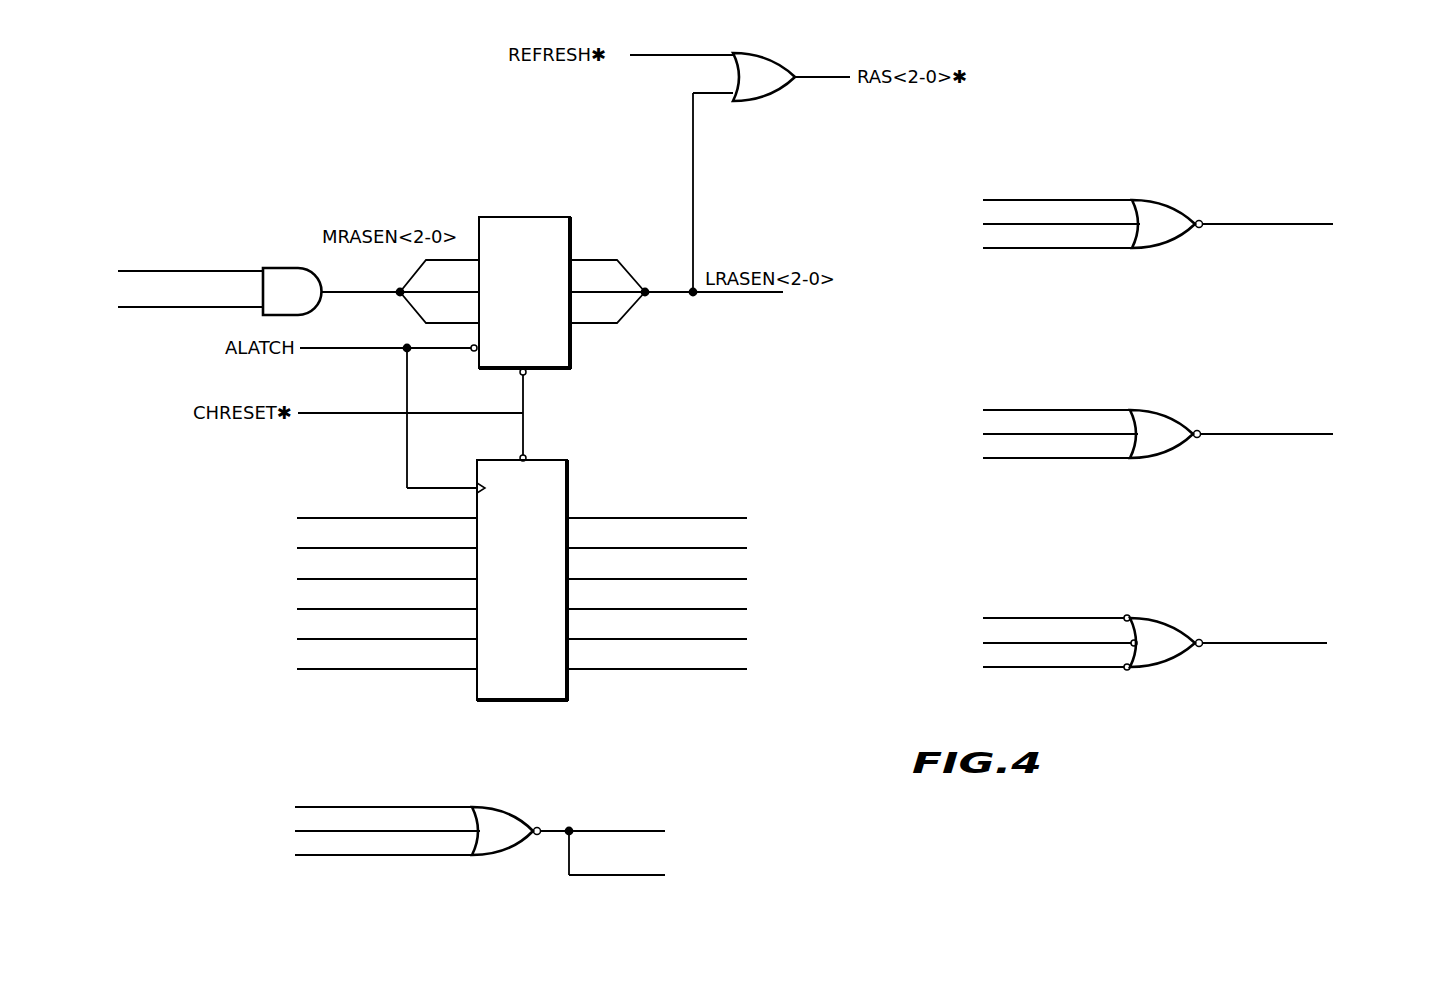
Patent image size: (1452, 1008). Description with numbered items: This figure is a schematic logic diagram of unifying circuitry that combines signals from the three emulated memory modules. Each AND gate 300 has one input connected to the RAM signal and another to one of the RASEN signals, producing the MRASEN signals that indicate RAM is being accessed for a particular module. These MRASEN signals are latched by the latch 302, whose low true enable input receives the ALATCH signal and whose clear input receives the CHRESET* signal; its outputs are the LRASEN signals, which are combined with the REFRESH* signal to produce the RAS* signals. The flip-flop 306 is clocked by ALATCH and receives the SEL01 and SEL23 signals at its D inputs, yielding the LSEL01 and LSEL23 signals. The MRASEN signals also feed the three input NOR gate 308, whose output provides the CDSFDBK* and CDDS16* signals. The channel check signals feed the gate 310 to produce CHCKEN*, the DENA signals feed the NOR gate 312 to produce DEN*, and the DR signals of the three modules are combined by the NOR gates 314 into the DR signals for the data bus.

The AND gate 300 is at (283, 268).
The latch 302 is at (521, 217).
The flip-flop 306 is at (575, 472).
The NOR gate 308 is at (509, 807).
The AND gate 310 is at (1165, 617).
The NOR gate 312 is at (1168, 202).
The NOR gate 314 is at (1166, 410).